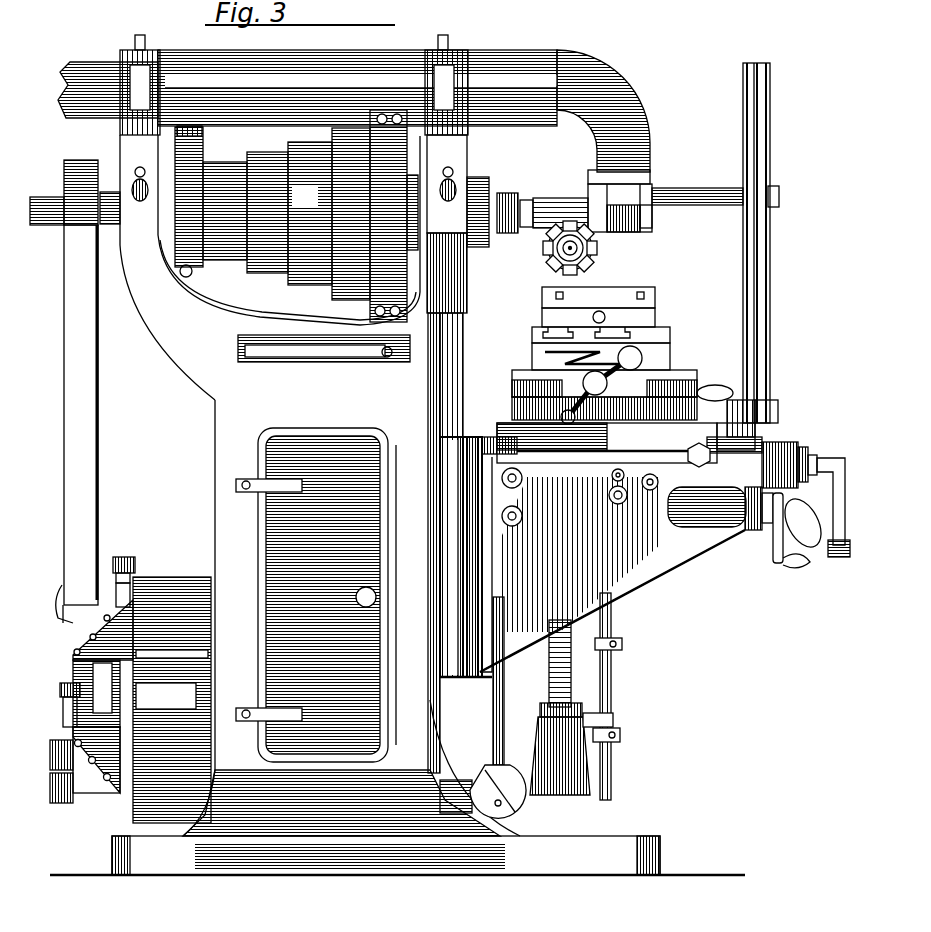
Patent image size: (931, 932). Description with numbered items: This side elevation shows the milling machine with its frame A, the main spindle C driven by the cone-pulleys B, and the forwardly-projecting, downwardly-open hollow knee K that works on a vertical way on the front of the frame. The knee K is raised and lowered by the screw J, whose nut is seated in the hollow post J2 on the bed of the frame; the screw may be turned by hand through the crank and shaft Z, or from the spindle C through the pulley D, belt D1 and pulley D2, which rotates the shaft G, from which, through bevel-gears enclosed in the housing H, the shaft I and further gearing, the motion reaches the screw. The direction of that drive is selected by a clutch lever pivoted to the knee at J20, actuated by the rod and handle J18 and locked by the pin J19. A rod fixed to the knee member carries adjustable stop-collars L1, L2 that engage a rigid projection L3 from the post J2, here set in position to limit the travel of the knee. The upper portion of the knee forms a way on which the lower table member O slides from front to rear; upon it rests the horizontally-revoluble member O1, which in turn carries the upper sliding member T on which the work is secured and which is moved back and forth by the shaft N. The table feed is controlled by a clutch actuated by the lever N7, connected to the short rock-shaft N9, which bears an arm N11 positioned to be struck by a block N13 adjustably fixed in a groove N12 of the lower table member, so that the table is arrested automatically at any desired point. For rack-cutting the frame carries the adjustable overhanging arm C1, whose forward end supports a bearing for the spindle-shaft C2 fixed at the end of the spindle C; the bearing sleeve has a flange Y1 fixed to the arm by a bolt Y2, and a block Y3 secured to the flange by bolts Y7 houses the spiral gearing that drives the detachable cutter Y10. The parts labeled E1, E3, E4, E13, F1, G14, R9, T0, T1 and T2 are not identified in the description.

The frame A is at (351, 585).
The cone-pulleys B is at (296, 216).
The main spindle C is at (508, 192).
The overhanging arm C1 is at (612, 105).
The spindle-shaft C2 is at (527, 199).
The pulley D is at (81, 180).
The belt D1 is at (64, 500).
The pulley D2 is at (62, 600).
The slotted plate E1 is at (103, 663).
The bolt shank E3 is at (130, 585).
The bolt head E4 is at (124, 556).
The lower bolt E13 is at (80, 690).
The feed box F1 is at (172, 700).
The shaft G is at (60, 803).
The lower plate G14 is at (118, 800).
The housing H is at (508, 770).
The shaft I is at (504, 682).
The screw J is at (571, 628).
The hollow post J2 is at (590, 778).
The rod and handle J18 is at (770, 533).
The pin J19 is at (523, 478).
The pivot J20 is at (523, 516).
The knee K is at (592, 567).
The stop-collar L1 is at (622, 644).
The stop-collar L2 is at (620, 735).
The rigid projection L3 is at (613, 718).
The shaft N is at (824, 458).
The lever N7 is at (820, 543).
The rock-shaft N9 is at (624, 502).
The arm N11 is at (658, 482).
The groove N12 is at (607, 445).
The block N13 is at (762, 470).
The lower member of the table O is at (739, 426).
The horizontally-revoluble member O1 is at (743, 335).
The clamp lever R9 is at (722, 380).
The upper sliding member T is at (655, 330).
The ball crank handle T0 is at (600, 395).
The T-slot plate T1 is at (670, 340).
The vise body T2 is at (601, 356).
The flange Y1 is at (618, 183).
The bolt Y2 is at (652, 188).
The block Y3 is at (565, 190).
The bolts Y7 is at (652, 222).
The cutter Y10 is at (548, 258).
The crank and shaft Z is at (762, 522).